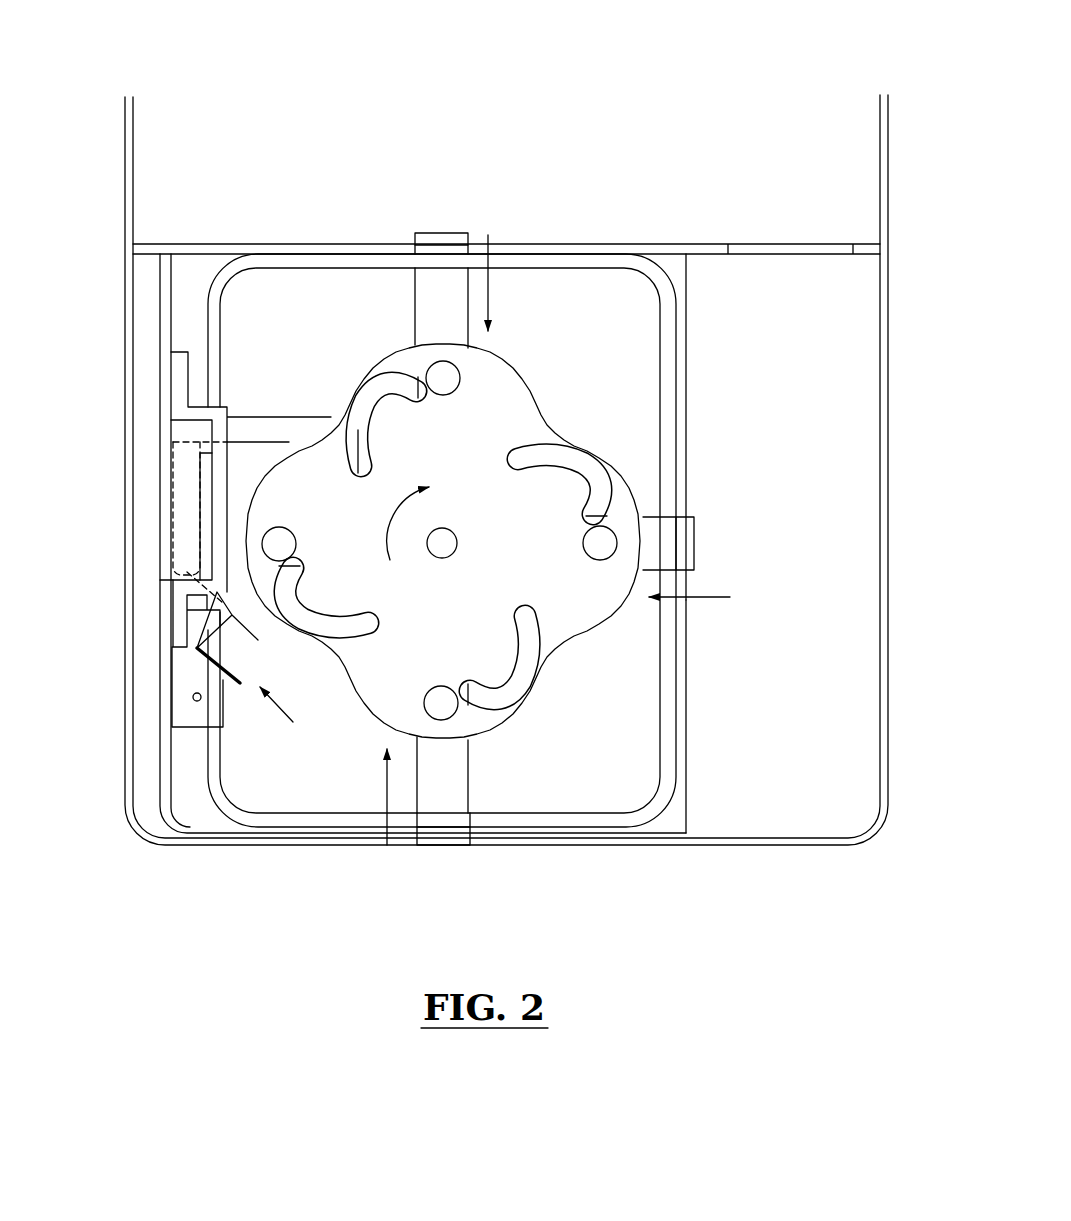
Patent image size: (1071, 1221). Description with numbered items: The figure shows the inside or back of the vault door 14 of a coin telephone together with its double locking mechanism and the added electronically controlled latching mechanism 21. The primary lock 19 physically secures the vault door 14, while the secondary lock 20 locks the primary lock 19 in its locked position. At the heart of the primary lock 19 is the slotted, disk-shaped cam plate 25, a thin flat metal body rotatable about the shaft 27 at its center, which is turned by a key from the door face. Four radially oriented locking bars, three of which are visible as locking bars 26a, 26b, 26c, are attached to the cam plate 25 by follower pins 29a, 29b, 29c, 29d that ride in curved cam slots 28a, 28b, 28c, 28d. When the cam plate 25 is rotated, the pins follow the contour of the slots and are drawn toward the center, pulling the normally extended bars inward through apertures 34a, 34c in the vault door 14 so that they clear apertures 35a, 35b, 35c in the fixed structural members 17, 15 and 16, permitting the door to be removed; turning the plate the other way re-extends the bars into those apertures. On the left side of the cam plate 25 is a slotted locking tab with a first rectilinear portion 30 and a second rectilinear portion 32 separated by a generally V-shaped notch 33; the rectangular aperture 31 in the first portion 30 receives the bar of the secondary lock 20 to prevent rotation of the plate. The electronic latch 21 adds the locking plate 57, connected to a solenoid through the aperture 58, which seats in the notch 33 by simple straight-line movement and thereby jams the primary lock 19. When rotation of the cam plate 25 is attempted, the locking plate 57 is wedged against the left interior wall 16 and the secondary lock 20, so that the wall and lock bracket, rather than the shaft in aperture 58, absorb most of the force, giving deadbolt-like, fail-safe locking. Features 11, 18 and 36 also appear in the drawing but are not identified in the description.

The lock housing 11 is at (688, 106).
The vault door 14 is at (679, 427).
The fixed structural member 15 is at (863, 336).
The left side interior structural member 16 is at (165, 768).
The fixed structural member 17 is at (690, 717).
The recess 18 is at (582, 339).
The primary lock 19 is at (338, 341).
The secondary lock 20 is at (180, 378).
The electronically controlled latching mechanism 21 is at (190, 772).
The cam plate 25 is at (562, 666).
The locking bar 26a is at (436, 308).
The locking bar 26b is at (696, 544).
The locking bar 26c is at (450, 787).
The shaft 27 is at (210, 252).
The curved cam slot 28a is at (352, 397).
The curved cam slot 28b is at (559, 437).
The curved cam slot 28c is at (524, 700).
The curved cam slot 28d is at (352, 623).
The follower pin 29a is at (440, 388).
The follower pin 29b is at (598, 545).
The follower pin 29c is at (445, 700).
The follower pin 29d is at (281, 545).
The first rectilinear portion 30 is at (183, 472).
The rectangular aperture 31 is at (192, 520).
The second rectilinear portion 32 is at (237, 668).
The V-shaped notch 33 is at (232, 642).
The aperture in vault door 34a is at (480, 241).
The aperture in vault door 34c is at (474, 832).
The aperture in fixed structural member 35a is at (406, 238).
The aperture in fixed structural member 35b is at (690, 508).
The aperture in fixed structural member 35c is at (410, 848).
The frame 36 is at (607, 258).
The locking plate 57 is at (182, 675).
The aperture 58 is at (200, 703).